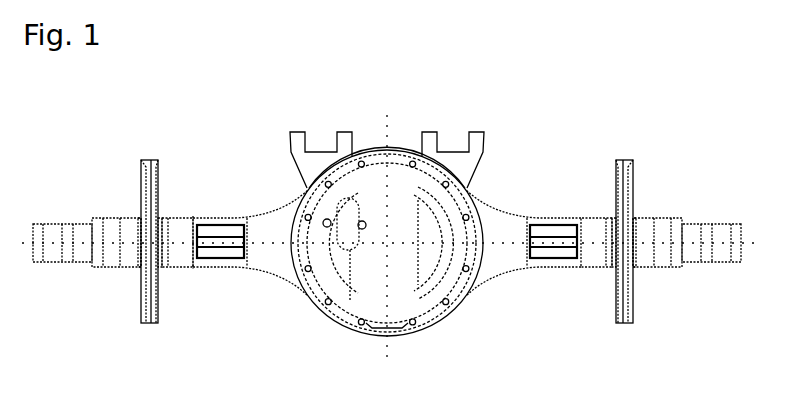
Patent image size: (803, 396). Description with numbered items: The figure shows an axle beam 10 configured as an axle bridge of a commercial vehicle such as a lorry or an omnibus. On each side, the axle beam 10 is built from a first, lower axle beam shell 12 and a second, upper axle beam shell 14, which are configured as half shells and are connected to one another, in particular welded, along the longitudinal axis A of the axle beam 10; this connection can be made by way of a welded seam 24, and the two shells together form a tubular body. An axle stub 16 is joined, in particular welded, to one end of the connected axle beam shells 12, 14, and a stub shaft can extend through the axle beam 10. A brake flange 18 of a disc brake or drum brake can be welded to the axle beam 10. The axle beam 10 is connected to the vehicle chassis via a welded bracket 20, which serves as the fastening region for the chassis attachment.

The axle beam 10 is at (389, 66).
The first axle beam shell 12 is at (203, 266).
The second axle beam shell 14 is at (178, 218).
The axle stub 16 is at (62, 227).
The brake flange 18 is at (147, 302).
The bracket 20 is at (230, 253).
The welded seam 24 is at (193, 258).
The longitudinal axis A is at (80, 245).